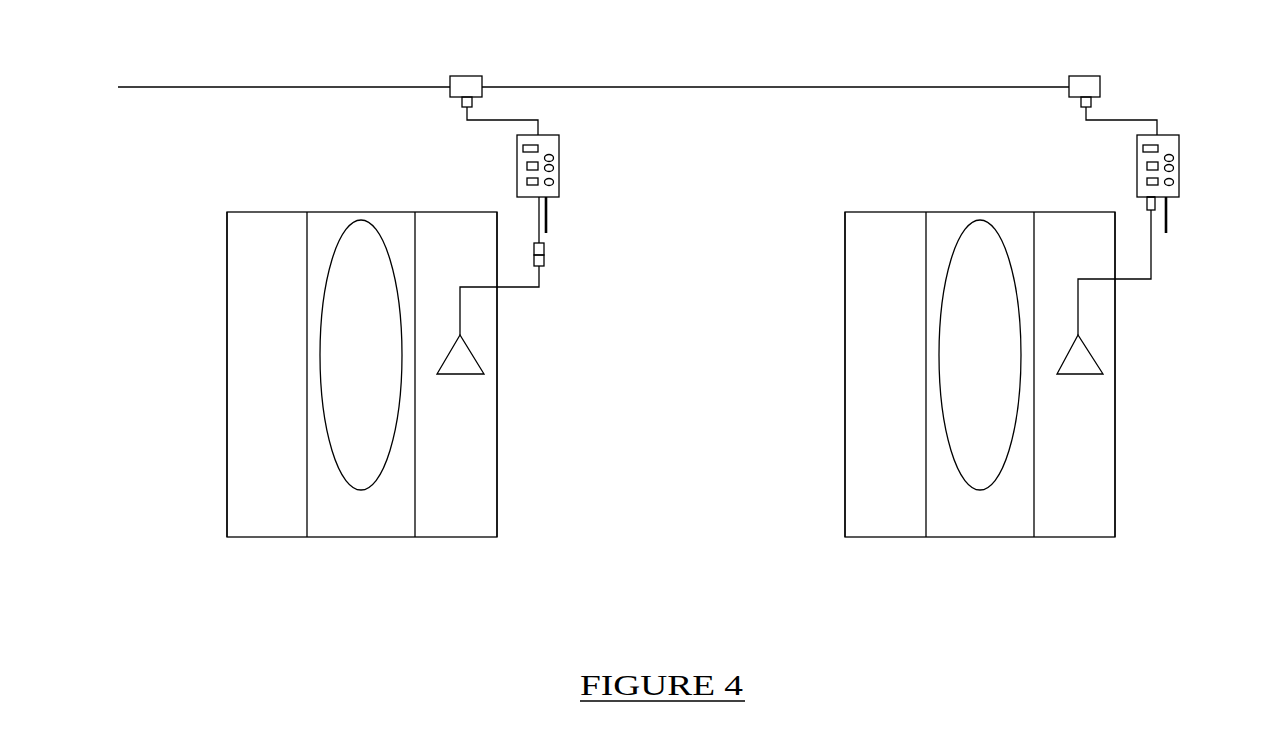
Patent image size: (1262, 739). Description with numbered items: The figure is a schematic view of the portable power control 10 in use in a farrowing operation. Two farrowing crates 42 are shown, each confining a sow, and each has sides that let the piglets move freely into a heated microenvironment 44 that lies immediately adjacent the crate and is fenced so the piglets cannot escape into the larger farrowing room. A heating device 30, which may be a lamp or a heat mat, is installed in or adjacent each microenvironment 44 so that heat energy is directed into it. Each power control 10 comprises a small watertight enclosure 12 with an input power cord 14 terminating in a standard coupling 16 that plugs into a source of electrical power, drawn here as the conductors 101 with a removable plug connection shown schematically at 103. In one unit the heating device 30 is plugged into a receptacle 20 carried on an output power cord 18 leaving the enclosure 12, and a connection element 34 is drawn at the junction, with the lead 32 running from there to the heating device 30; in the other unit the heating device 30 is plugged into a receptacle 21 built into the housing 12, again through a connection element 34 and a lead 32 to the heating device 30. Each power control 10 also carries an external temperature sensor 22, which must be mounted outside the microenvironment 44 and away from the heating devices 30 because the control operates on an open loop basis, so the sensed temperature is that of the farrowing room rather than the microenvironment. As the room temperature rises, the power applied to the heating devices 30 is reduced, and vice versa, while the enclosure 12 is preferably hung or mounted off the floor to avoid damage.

The conductors 101 is at (747, 87).
The removable plug 103 is at (469, 76).
The coupling 16 is at (460, 102).
The input power cord 14 is at (495, 122).
The power control 10 is at (861, 136).
The enclosure 12 is at (560, 182).
The output power cord 18 is at (538, 214).
The temperature sensor 22 is at (548, 215).
The receptacle 20 is at (545, 250).
The adapter 34 is at (545, 260).
The built in receptacle 21 is at (1143, 197).
The sensor cable 32 is at (542, 277).
The heating device 30 is at (470, 358).
The farrowing crate 42 is at (367, 538).
The microenvironment 44 is at (266, 532).